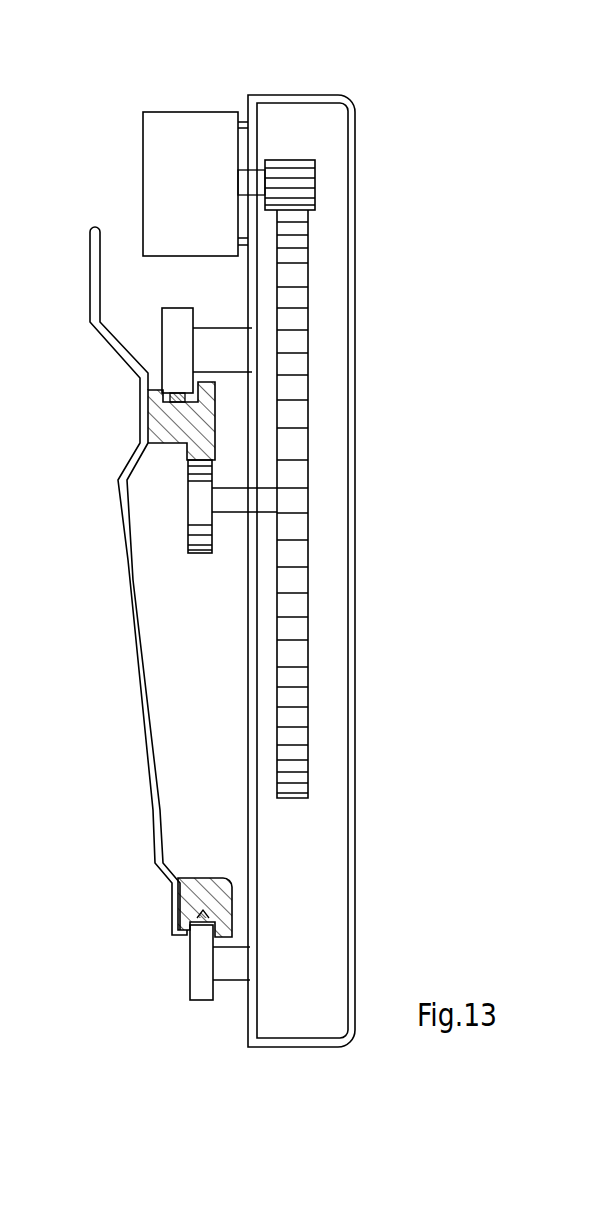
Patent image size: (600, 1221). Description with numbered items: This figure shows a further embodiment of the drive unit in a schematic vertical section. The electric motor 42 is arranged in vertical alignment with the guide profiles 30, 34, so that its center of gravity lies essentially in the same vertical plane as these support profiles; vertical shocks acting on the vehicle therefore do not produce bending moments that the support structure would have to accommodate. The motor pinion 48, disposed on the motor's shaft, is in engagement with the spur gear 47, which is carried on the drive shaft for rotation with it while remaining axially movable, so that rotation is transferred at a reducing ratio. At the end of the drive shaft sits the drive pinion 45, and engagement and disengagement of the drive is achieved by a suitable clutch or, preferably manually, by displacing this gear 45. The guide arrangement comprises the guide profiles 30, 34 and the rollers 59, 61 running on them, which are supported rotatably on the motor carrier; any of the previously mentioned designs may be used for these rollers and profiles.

The electric motor 42 is at (182, 238).
The motor pinion 48 is at (282, 160).
The spur gear 47 is at (298, 297).
The guide wheel 59 is at (172, 333).
The guide profile 30 is at (168, 468).
The drive pinion 45 is at (200, 558).
The guide profile 34 is at (192, 850).
The guide wheel 61 is at (207, 972).